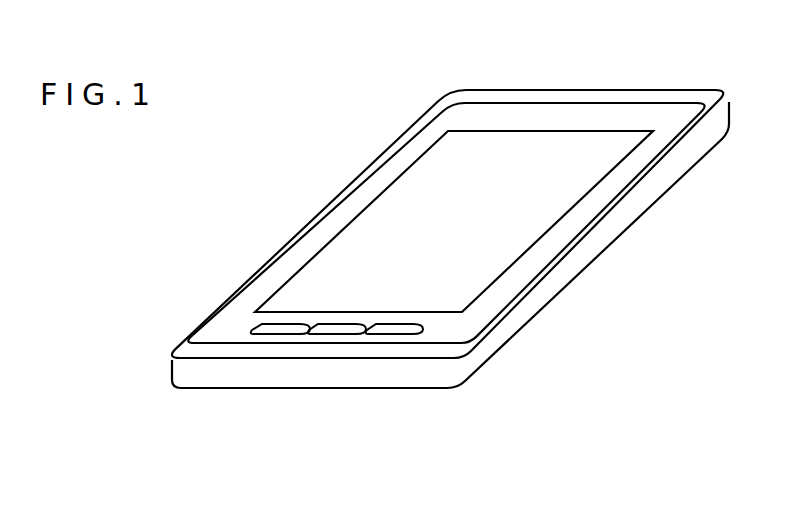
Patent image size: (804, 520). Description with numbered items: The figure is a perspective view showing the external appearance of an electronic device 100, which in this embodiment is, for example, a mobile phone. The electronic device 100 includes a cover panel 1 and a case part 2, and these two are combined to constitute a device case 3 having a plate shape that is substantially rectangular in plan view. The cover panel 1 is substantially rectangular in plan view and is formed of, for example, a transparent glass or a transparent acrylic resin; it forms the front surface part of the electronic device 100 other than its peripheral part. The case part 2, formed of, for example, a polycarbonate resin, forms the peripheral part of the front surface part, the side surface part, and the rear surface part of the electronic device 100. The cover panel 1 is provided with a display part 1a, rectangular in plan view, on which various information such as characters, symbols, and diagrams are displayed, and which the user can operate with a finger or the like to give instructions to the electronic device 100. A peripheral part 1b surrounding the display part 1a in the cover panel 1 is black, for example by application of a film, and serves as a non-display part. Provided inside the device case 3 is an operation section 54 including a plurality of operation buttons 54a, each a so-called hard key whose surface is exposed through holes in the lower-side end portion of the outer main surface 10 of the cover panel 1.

The electronic device 100 is at (538, 70).
The device case 3 is at (673, 88).
The cover panel 1 is at (652, 146).
The outer main surface 10 is at (595, 203).
The display part 1a is at (518, 235).
The peripheral part 1b is at (505, 283).
The case part 2 is at (510, 317).
The operation section 54 is at (334, 406).
The operation button 54a is at (417, 433).